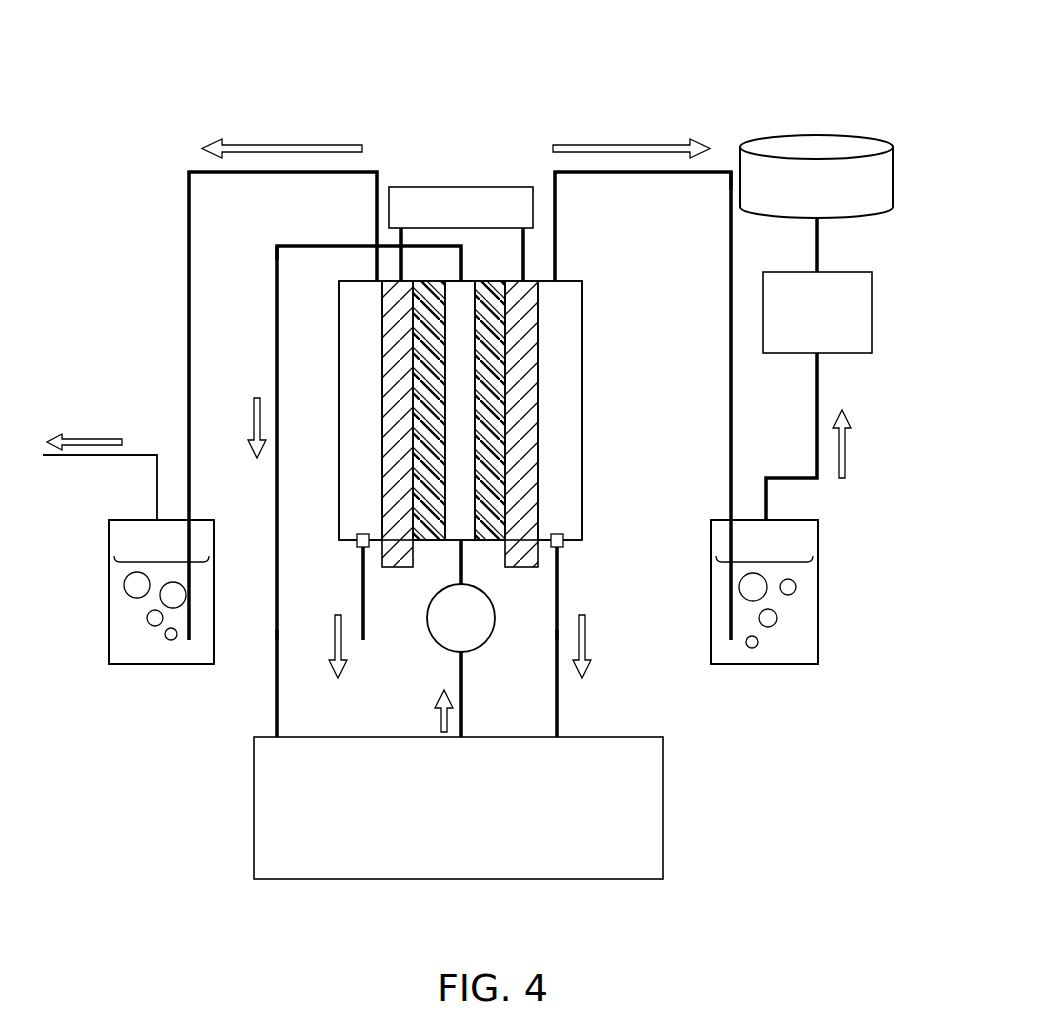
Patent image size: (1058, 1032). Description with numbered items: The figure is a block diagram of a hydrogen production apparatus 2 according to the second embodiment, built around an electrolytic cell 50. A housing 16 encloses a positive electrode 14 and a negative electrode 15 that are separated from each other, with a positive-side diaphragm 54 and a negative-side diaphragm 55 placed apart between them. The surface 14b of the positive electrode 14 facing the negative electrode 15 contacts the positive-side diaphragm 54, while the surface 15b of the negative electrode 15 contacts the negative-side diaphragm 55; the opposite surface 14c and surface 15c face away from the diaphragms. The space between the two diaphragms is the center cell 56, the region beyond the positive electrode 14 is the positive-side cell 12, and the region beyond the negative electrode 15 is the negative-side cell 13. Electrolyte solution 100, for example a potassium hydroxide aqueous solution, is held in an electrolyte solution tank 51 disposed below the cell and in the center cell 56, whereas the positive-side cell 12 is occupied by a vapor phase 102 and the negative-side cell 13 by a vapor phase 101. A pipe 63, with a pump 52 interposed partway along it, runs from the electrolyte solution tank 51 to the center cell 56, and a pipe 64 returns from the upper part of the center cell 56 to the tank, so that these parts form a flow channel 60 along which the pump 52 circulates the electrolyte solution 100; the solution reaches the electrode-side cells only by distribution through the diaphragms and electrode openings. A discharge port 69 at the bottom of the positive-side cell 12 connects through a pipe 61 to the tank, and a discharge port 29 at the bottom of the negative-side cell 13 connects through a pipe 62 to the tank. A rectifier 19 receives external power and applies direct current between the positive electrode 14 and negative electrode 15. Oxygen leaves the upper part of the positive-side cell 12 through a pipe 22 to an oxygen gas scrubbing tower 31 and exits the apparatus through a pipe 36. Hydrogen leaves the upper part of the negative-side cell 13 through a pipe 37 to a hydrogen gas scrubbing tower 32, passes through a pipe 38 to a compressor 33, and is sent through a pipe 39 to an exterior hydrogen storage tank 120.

The hydrogen production apparatus 2 is at (632, 87).
The positive-side cell 12 is at (356, 374).
The negative-side cell 13 is at (565, 345).
The positive electrode 14 is at (362, 449).
The surface of the positive electrode 14b is at (414, 486).
The surface of the positive electrode 14c is at (382, 440).
The negative electrode 15 is at (563, 449).
The surface of the negative electrode 15b is at (497, 492).
The surface of the negative electrode 15c is at (538, 430).
The housing 16 is at (583, 462).
The rectifier 19 is at (466, 180).
The pipe 22 is at (188, 284).
The discharge port 29 is at (574, 612).
The oxygen gas scrubbing tower 31 is at (140, 666).
The hydrogen gas scrubbing tower 32 is at (795, 666).
The compressor 33 is at (873, 318).
The pipe 36 is at (75, 458).
The pipe 37 is at (729, 324).
The pipe 38 is at (822, 380).
The pipe 39 is at (822, 240).
The electrolytic cell 50 is at (577, 268).
The electrolyte solution tank 51 is at (665, 824).
The pump 52 is at (487, 640).
The positive-side diaphragm 54 is at (430, 536).
The negative-side diaphragm 55 is at (493, 536).
The center cell 56 is at (467, 292).
The flow channel 60 is at (270, 269).
The pipe 61 is at (361, 710).
The pipe 62 is at (559, 705).
The pipe 63 is at (464, 710).
The pipe 64 is at (276, 322).
The discharge port 69 is at (345, 612).
The electrolyte solution 100 is at (462, 395).
The vapor phase 101 is at (574, 532).
The vapor phase 102 is at (345, 532).
The hydrogen storage tank 120 is at (845, 140).